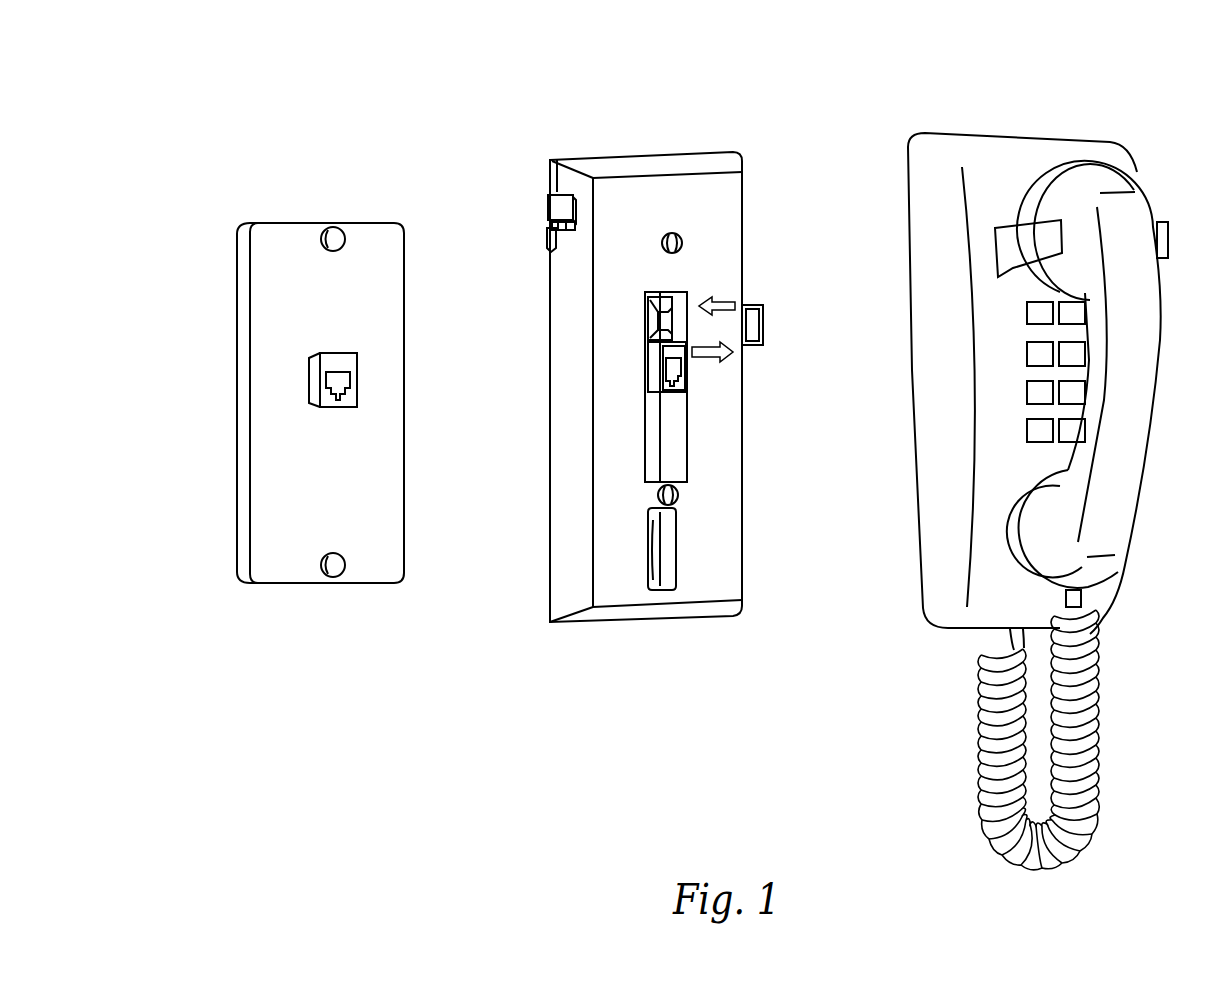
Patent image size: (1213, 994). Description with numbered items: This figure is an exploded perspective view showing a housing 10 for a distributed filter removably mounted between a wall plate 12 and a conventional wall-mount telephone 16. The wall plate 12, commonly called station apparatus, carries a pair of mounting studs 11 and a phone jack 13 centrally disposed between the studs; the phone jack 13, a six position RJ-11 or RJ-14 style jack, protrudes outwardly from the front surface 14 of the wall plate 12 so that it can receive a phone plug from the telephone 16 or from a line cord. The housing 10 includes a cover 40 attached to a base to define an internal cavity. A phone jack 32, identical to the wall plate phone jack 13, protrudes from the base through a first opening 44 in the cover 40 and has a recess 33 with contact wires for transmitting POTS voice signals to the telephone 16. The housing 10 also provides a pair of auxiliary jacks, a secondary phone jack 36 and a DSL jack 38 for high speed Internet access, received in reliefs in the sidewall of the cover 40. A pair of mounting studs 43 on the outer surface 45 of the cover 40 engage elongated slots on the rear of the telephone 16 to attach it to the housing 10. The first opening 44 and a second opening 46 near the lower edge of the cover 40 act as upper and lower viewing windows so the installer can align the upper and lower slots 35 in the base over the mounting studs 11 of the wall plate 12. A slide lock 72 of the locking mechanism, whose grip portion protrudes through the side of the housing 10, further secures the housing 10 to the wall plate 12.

The housing 10 is at (694, 136).
The mounting studs 11 is at (334, 237).
The wall plate 12 is at (278, 221).
The phone jack 13 is at (336, 386).
The front surface 14 is at (339, 306).
The wall-mount telephone 16 is at (1016, 133).
The phone jack 32 is at (656, 386).
The recess 33 is at (686, 389).
The upper and lower slots 35 is at (648, 320).
The secondary phone jack 36 is at (751, 196).
The DSL jack 38 is at (548, 206).
The cover 40 is at (621, 596).
The mounting studs 43 is at (661, 243).
The first opening 44 is at (686, 448).
The outer surface 45 is at (631, 560).
The second opening 46 is at (677, 546).
The slide lock 72 is at (764, 323).